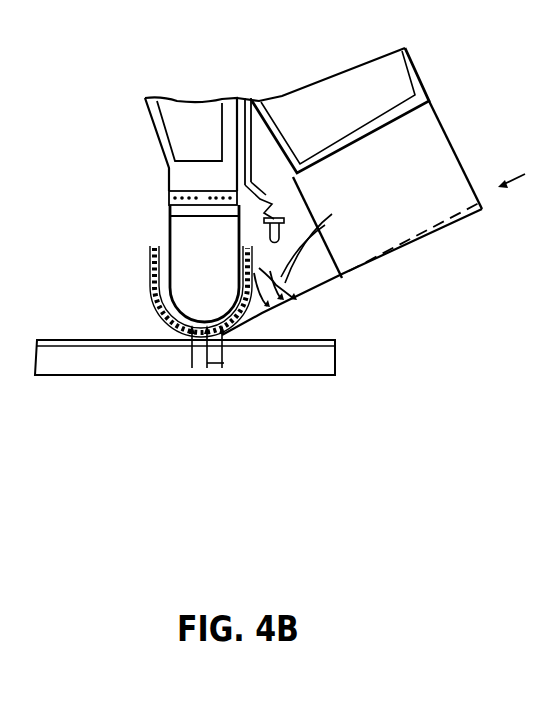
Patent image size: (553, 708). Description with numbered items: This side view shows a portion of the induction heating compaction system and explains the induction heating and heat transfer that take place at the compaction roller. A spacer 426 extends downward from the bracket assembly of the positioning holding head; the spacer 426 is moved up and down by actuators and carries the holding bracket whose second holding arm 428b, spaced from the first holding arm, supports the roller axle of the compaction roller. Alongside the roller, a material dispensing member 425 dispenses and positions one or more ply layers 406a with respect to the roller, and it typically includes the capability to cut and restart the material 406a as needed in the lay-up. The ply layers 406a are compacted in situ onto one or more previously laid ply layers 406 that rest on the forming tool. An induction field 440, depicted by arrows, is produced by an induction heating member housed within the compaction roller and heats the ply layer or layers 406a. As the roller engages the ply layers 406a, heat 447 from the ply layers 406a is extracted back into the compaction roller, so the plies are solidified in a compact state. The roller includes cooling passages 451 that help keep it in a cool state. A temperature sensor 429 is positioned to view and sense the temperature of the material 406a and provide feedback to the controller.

The material dispensing member 425 is at (427, 140).
The spacer 426 is at (156, 126).
The second holding arm 428b is at (190, 245).
The temperature sensor 429 is at (282, 217).
The induction field 440 is at (329, 244).
The heat 447 is at (278, 303).
The cooling passages 451 is at (152, 278).
The ply layers 406 is at (222, 365).
The ply layer or ply layers 406a is at (483, 201).